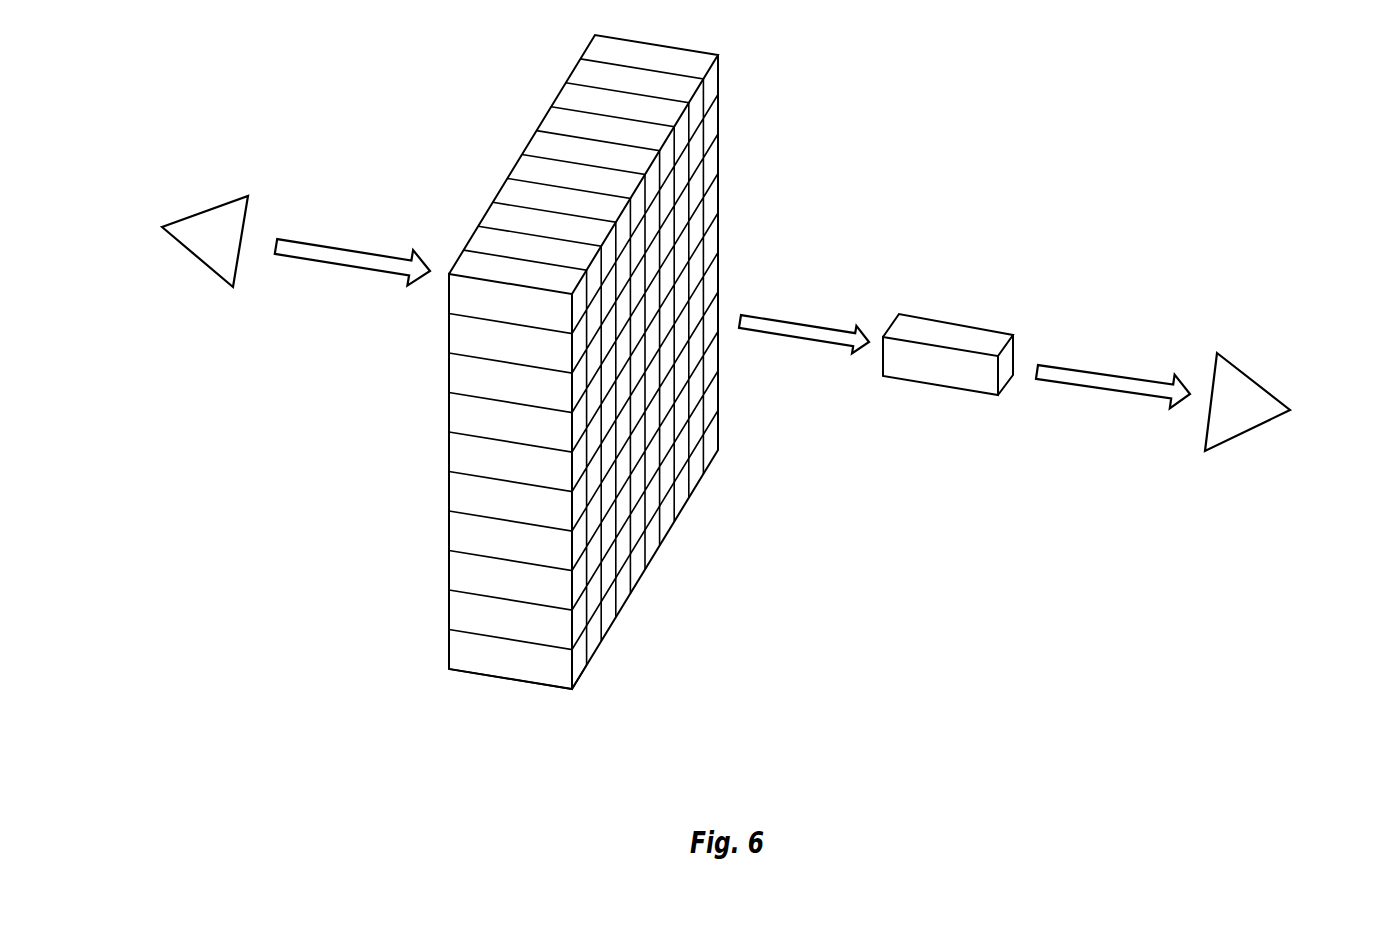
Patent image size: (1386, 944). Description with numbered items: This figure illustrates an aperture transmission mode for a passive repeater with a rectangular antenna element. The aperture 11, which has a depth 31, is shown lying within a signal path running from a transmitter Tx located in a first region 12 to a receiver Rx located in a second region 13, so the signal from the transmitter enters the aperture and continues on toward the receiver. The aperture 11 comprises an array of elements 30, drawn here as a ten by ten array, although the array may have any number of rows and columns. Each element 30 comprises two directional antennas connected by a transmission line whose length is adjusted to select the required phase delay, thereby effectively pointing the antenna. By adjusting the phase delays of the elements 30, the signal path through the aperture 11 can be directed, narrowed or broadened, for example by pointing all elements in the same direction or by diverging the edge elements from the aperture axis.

The aperture 11 is at (585, 391).
The first region 12 is at (197, 197).
The second region 13 is at (1270, 376).
The element 30 is at (927, 398).
The depth 31 is at (504, 700).